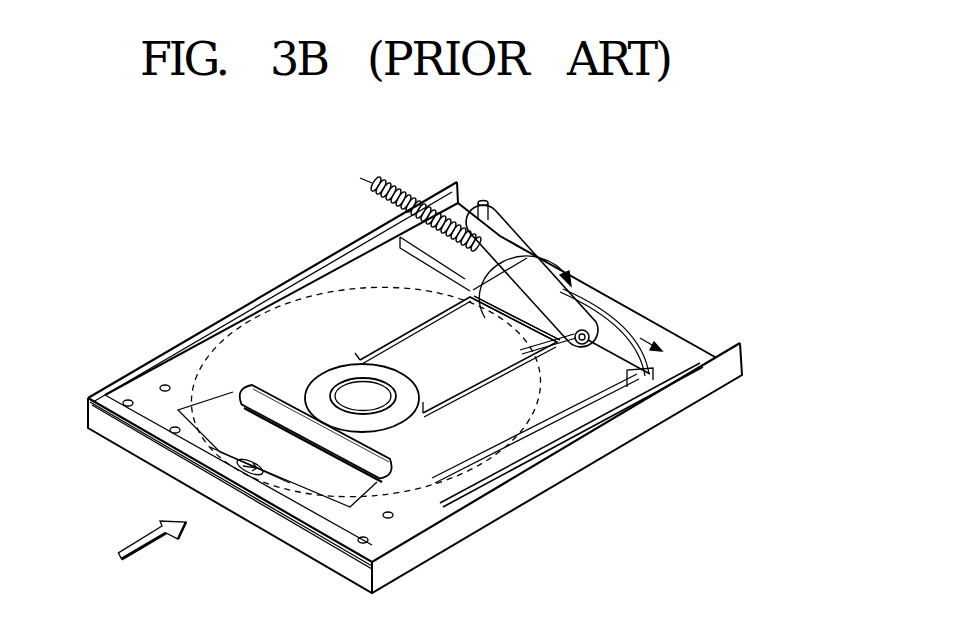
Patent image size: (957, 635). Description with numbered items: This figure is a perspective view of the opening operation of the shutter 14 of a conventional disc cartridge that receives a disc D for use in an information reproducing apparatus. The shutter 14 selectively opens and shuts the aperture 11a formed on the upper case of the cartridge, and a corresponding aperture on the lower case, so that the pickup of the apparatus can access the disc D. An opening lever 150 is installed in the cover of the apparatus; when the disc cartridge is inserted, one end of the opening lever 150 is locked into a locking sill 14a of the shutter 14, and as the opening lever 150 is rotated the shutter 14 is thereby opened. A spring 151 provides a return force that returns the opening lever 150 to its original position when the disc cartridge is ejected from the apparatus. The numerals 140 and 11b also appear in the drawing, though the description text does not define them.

The tray 140 is at (543, 477).
The shutter 14 is at (490, 487).
The locking sill 14a is at (660, 377).
The disc D is at (313, 300).
The opening lever 150 is at (502, 228).
The spring 151 is at (402, 207).
The aperture 11a is at (512, 303).
The guide rail 11b (12b) 11b is at (477, 463).